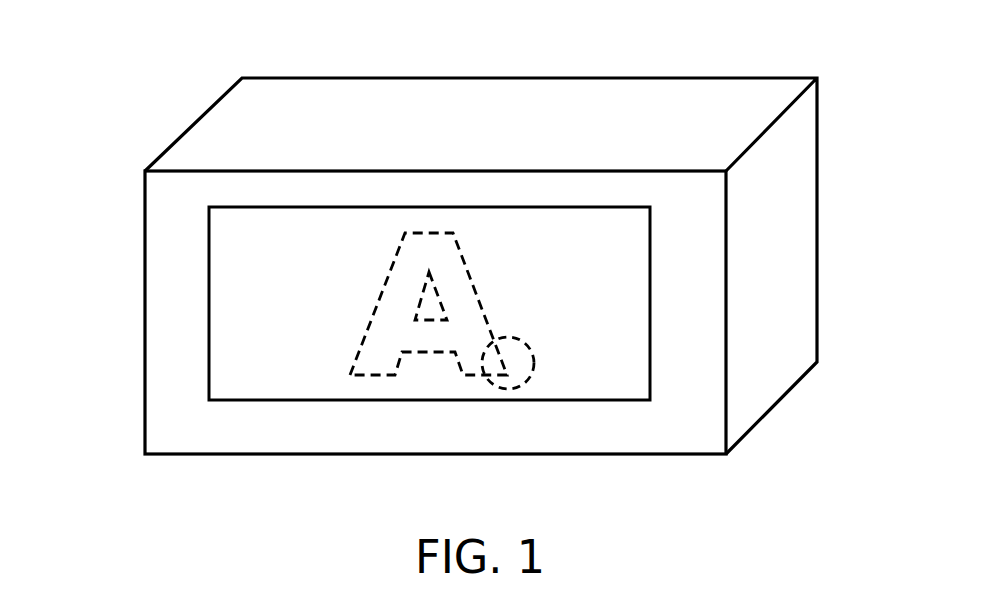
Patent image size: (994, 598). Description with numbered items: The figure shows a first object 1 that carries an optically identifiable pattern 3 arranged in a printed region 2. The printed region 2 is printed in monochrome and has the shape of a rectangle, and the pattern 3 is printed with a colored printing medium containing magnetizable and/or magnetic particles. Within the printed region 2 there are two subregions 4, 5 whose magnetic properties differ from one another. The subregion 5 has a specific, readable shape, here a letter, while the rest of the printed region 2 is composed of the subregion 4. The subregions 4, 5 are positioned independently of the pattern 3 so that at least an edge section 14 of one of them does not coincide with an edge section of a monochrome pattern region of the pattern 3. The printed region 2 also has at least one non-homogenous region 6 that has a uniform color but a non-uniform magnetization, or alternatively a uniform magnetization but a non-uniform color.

The object 1 is at (669, 78).
The printed region 2 is at (597, 381).
The pattern 3 is at (224, 297).
The subregion 4 is at (299, 380).
The subregion 5 is at (382, 370).
The non-homogenous region 6 is at (535, 360).
The edge section 14 is at (510, 353).